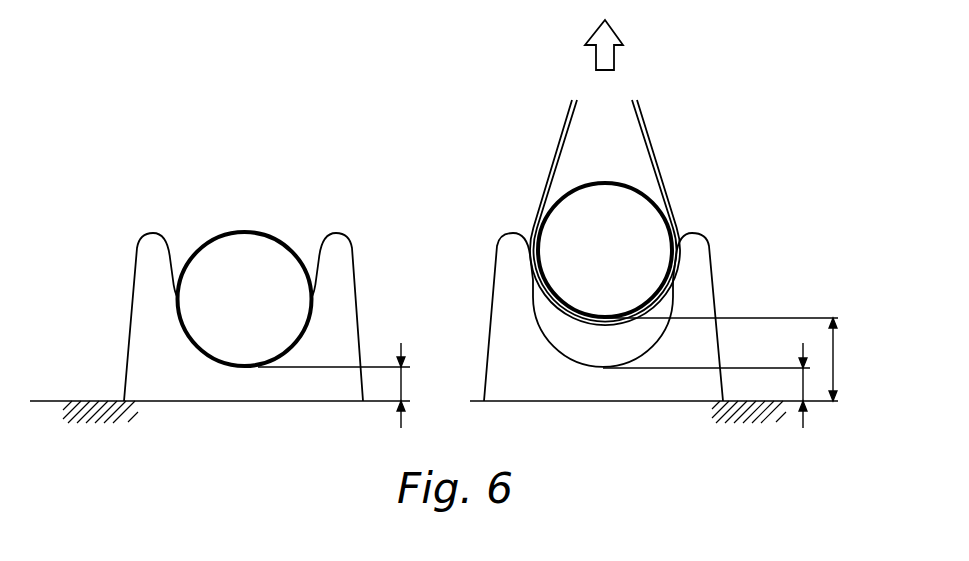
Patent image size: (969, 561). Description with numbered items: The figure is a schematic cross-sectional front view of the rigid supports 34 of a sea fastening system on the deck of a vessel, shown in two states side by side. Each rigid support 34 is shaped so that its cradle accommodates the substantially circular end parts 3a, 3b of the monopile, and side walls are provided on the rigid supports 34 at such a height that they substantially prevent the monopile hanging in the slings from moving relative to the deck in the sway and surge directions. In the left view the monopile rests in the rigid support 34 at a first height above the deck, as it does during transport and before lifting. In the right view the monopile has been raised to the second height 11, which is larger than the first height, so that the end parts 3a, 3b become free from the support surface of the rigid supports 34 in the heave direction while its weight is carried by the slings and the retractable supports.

The end part of the monopile 3a is at (245, 255).
The end part of the monopile 3b is at (252, 231).
The rigid support 34 is at (244, 311).
The second height 11 is at (834, 355).